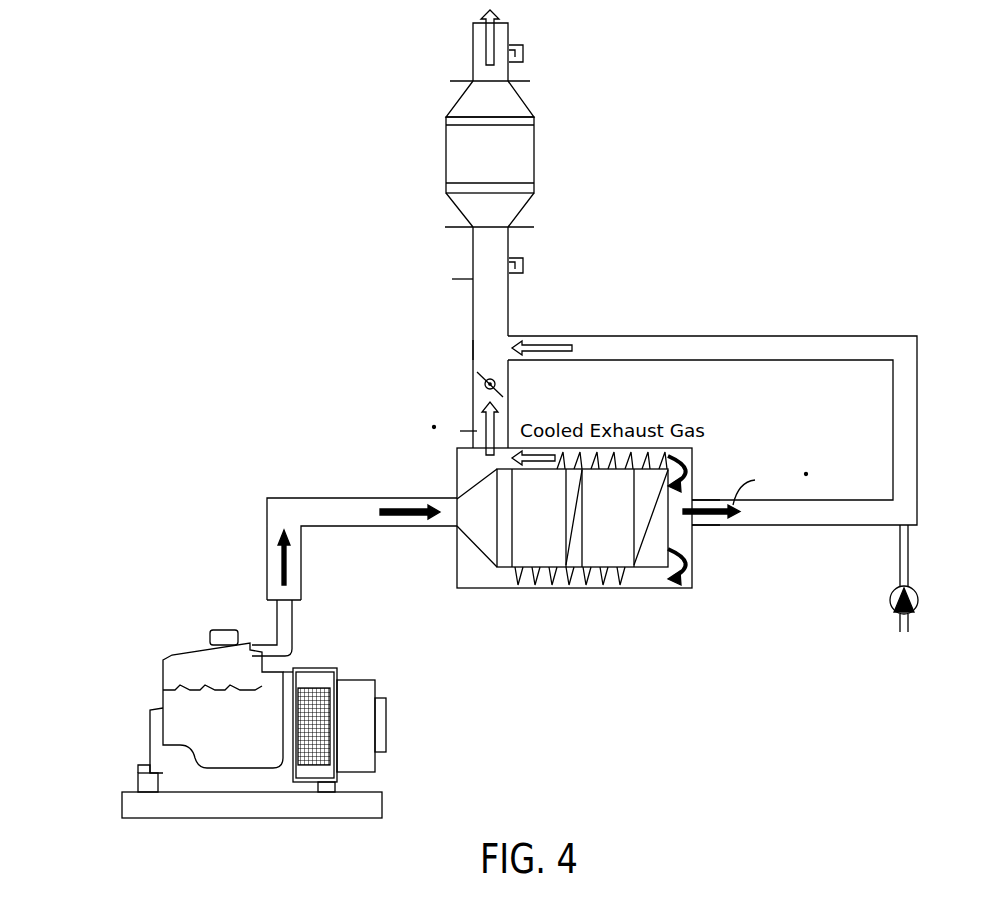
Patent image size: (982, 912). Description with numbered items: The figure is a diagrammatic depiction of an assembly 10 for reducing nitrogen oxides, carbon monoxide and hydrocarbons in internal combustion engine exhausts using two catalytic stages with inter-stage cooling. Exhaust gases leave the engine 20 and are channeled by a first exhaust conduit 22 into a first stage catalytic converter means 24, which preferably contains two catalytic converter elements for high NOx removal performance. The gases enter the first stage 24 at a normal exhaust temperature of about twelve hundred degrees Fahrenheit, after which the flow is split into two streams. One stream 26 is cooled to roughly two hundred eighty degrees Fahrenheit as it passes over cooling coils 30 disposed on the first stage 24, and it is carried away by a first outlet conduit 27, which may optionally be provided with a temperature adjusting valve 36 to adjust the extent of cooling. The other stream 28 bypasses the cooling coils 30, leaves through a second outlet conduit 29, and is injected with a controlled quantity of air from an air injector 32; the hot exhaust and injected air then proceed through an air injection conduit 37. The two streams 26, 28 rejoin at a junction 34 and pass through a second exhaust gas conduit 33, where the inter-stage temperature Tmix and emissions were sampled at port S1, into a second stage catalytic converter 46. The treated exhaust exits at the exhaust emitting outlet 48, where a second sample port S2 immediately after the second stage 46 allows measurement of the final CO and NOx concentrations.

The assembly 10 is at (297, 190).
The engine 20 is at (163, 680).
The first exhaust conduit 22 is at (265, 523).
The first stage catalytic converter means 24 is at (545, 590).
The first portion stream 26 is at (497, 425).
The first outlet conduit 27 is at (473, 392).
The second stream 28 is at (718, 517).
The second outlet conduit 29 is at (828, 525).
The cooling coils 30 is at (625, 572).
The air injector 32 is at (918, 598).
The second exhaust gas conduit 33 is at (473, 300).
The junction 34 is at (473, 350).
The temperature adjusting valve 36 is at (478, 388).
The air injection conduit 37 is at (918, 390).
The second stage catalytic converter 46 is at (447, 155).
The exhaust emitting outlet 48 is at (478, 40).
The sample port S1 is at (518, 258).
The sample port S2 is at (518, 44).